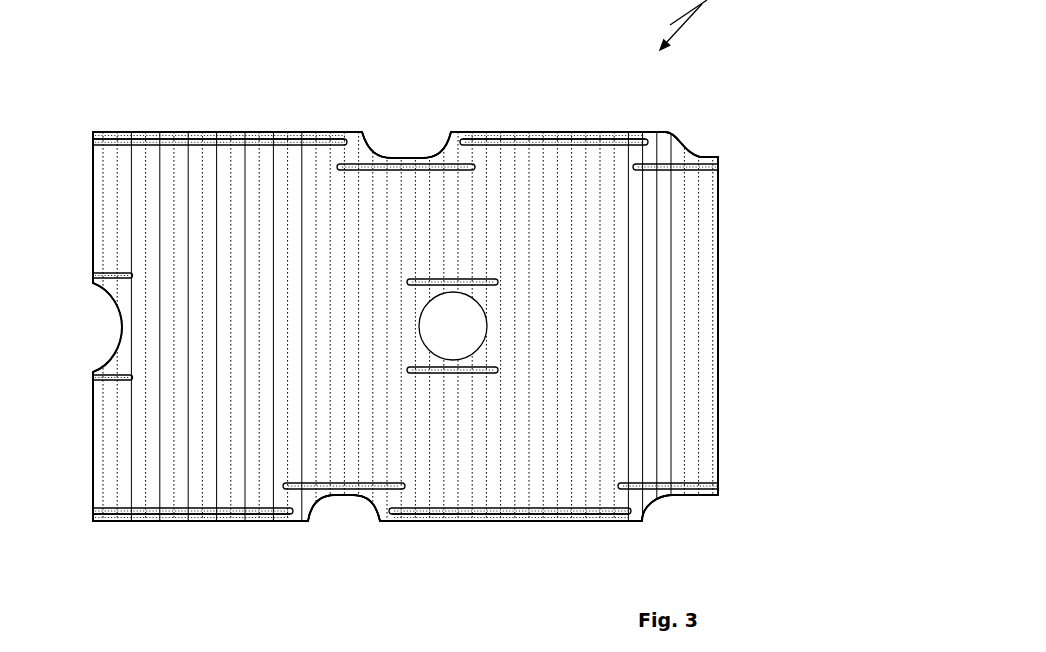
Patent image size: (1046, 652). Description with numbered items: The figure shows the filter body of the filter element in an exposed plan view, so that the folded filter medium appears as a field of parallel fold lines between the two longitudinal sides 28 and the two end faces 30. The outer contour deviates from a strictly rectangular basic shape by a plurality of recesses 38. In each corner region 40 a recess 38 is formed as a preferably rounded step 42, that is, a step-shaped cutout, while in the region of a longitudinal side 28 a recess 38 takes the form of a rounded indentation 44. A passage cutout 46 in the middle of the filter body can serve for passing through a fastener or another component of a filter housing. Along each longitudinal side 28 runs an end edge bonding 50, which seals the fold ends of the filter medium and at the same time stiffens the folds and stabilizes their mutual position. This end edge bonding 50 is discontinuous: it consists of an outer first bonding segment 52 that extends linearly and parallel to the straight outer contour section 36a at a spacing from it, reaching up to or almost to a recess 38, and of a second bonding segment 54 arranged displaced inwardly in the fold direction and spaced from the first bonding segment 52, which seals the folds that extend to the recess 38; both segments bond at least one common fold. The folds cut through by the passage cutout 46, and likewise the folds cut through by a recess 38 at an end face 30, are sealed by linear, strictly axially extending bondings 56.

The longitudinal side 28 is at (165, 132).
The end face 30 is at (93, 222).
The outer contour section 36a is at (205, 132).
The recess 38 is at (429, 125).
The corner region 40 is at (689, 131).
The rounded step 42 is at (689, 131).
The indentation 44 is at (429, 125).
The passage cutout 46 is at (490, 320).
The end edge bonding 50 is at (451, 140).
The first bonding segment 52 is at (253, 137).
The second bonding segment 54 is at (418, 166).
The bonding 56 is at (100, 373).